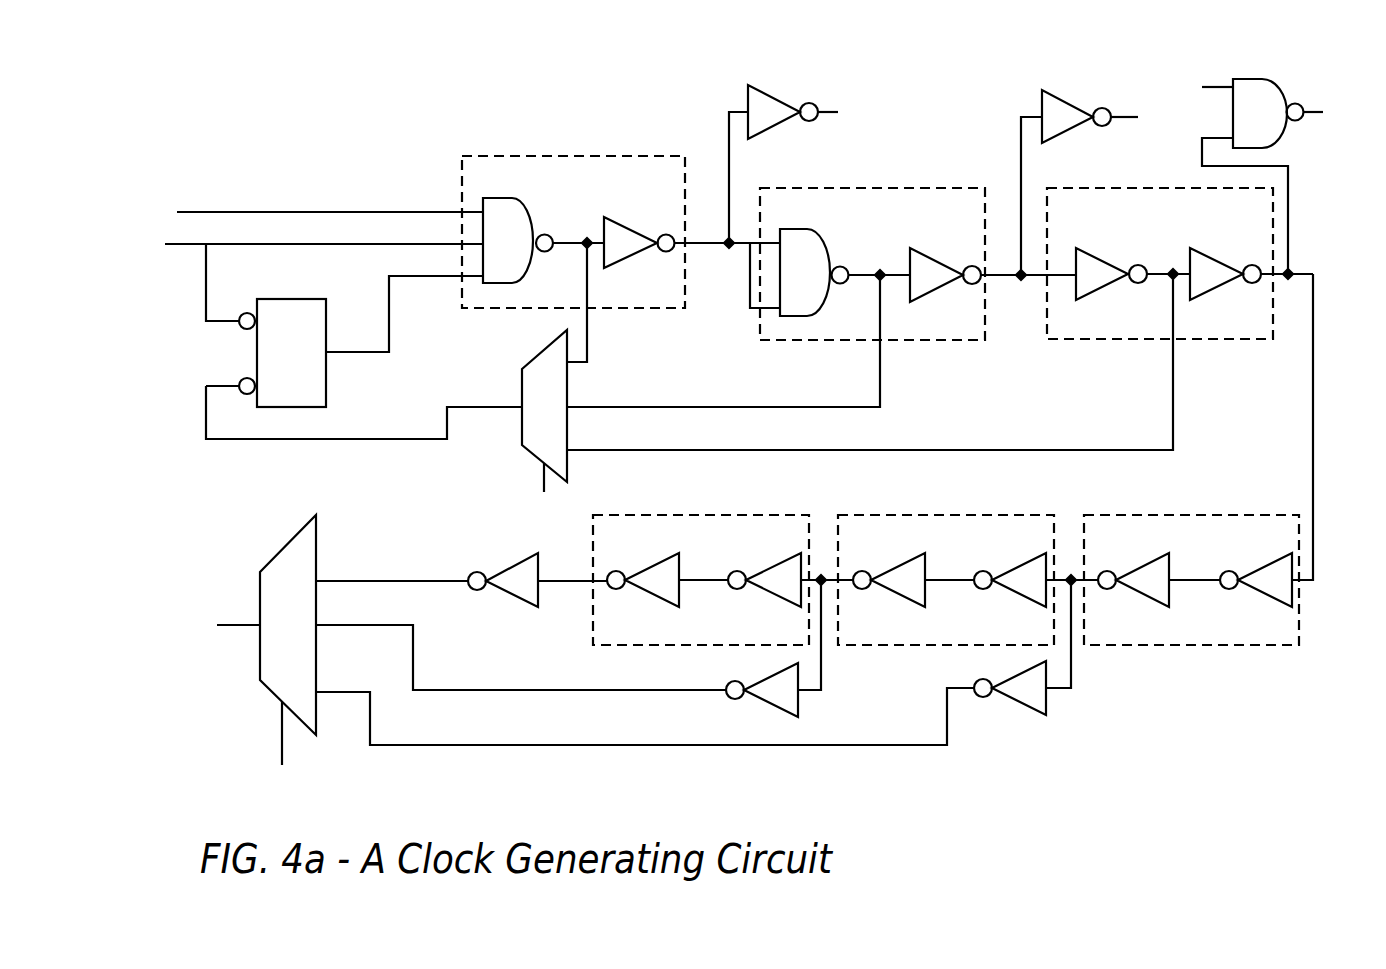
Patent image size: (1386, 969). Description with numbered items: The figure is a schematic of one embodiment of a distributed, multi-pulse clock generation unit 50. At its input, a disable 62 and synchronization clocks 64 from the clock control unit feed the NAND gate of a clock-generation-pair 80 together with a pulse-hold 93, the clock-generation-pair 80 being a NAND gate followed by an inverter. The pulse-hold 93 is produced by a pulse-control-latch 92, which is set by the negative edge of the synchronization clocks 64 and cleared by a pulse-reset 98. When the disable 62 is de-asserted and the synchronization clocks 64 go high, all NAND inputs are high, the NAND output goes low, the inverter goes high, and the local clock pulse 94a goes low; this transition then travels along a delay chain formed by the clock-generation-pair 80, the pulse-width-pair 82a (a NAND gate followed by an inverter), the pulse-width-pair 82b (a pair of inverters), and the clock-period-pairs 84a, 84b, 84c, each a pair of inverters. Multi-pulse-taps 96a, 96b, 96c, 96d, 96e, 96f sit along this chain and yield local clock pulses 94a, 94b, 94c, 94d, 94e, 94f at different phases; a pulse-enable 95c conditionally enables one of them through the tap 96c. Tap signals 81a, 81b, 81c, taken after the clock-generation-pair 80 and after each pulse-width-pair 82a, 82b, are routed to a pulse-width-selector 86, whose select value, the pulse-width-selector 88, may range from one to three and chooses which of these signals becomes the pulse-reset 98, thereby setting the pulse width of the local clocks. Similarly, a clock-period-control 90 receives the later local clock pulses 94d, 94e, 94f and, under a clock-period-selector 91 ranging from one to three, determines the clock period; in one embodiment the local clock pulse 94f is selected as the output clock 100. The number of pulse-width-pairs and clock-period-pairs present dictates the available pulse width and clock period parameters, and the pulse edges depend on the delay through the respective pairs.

The clock generation unit 50 is at (426, 110).
The disable 62 is at (278, 211).
The synchronization clocks 64 is at (318, 246).
The clock-generation-pair 80 is at (584, 201).
The signal 81a is at (588, 347).
The signal 81b is at (690, 406).
The signal 81c is at (945, 448).
The pulse-width-pair 82a is at (883, 233).
The pulse-width-pair 82b is at (1170, 233).
The clock-period-pair 84a is at (1130, 633).
The clock-period-pair 84b is at (887, 633).
The clock-period-pair 84c is at (640, 633).
The pulse-width-selector 86 is at (535, 365).
The pulse-width-selector 88 is at (540, 490).
The clock-period-control 90 is at (285, 543).
The clock-period-selector 91 is at (280, 737).
The pulse-control-latch 92 is at (318, 384).
The pulse-hold 93 is at (378, 353).
The local clock pulse 94a is at (815, 106).
The local clock pulse 94b is at (1108, 110).
The local clock pulse 94c is at (1302, 105).
The local clock pulse 94d is at (928, 743).
The local clock pulse 94e is at (583, 690).
The local clock pulse 94f is at (448, 579).
The pulse-enable 95c is at (1215, 85).
The multi-pulse-tap 96a is at (770, 125).
The multi-pulse-tap 96b is at (1065, 130).
The multi-pulse-tap 96c is at (1282, 130).
The multi-pulse-tap 96d is at (1033, 712).
The multi-pulse-tap 96e is at (757, 700).
The multi-pulse-tap 96f is at (518, 597).
The pulse-reset 98 is at (385, 438).
The output clock 100 is at (228, 622).